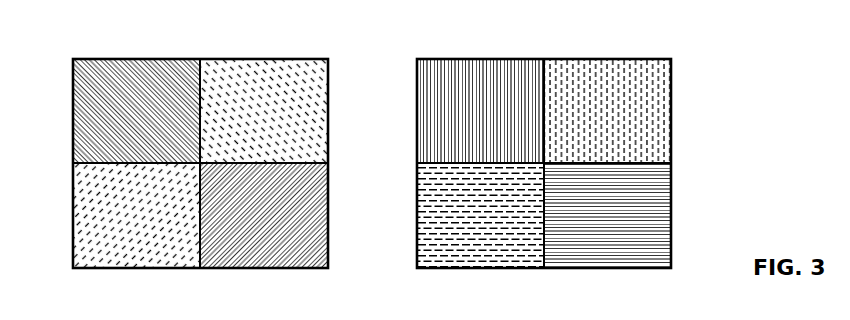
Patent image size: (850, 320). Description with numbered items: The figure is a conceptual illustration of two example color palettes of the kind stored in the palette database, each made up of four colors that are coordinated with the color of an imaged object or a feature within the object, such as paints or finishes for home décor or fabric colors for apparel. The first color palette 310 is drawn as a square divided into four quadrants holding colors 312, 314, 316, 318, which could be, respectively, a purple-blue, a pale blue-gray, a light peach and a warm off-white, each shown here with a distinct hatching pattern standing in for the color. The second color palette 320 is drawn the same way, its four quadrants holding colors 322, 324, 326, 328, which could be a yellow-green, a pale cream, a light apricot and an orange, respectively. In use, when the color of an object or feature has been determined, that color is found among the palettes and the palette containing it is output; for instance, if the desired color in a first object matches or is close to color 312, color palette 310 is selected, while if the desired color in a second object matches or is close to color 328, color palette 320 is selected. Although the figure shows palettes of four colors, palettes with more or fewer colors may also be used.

The color palette 310 is at (200, 135).
The color 312 is at (119, 119).
The color 314 is at (243, 119).
The color 316 is at (118, 225).
The color 318 is at (245, 225).
The color palette 320 is at (544, 135).
The color 322 is at (463, 119).
The color 324 is at (588, 119).
The color 326 is at (463, 225).
The color 328 is at (588, 225).